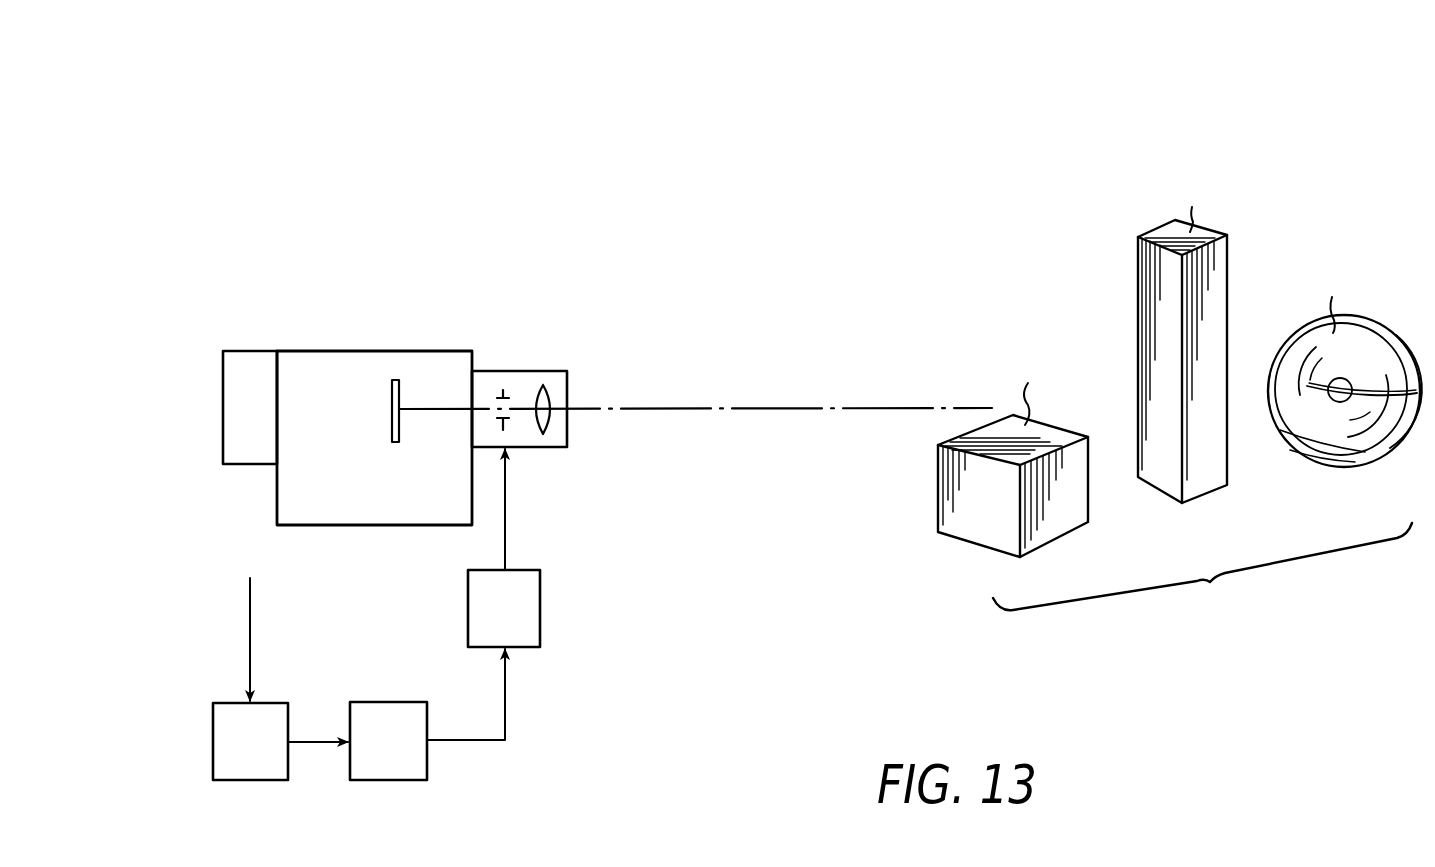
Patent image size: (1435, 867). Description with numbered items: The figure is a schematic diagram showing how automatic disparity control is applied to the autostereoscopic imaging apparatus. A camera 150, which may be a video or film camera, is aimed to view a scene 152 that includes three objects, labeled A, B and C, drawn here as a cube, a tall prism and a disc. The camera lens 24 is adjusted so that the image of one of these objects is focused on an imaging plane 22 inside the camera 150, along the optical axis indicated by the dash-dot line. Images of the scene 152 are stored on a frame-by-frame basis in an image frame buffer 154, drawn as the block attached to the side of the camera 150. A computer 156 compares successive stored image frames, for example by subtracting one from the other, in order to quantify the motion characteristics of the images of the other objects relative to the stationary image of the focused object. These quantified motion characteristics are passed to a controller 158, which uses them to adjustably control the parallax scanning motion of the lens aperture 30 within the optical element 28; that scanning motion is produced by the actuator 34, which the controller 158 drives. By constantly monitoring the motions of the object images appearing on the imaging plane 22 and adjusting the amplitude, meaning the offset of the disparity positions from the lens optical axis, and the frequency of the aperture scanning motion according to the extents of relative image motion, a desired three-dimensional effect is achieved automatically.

The imaging plane 22 is at (390, 437).
The camera lens 24 is at (572, 388).
The optical element 28 is at (506, 389).
The lens aperture 30 is at (500, 402).
The actuator 34 is at (519, 620).
The camera 150 is at (365, 513).
The scene 152 is at (1180, 397).
The image frame buffer 154 is at (232, 393).
The computer 156 is at (178, 770).
The controller 158 is at (405, 752).